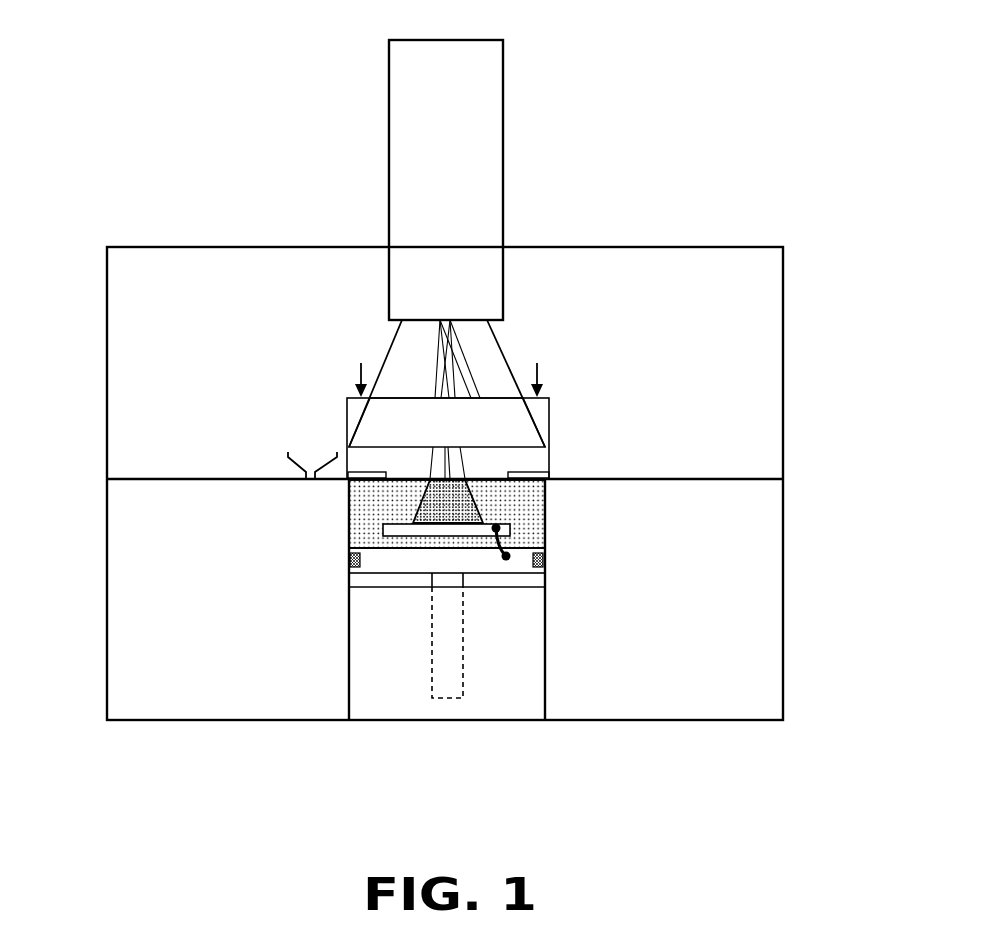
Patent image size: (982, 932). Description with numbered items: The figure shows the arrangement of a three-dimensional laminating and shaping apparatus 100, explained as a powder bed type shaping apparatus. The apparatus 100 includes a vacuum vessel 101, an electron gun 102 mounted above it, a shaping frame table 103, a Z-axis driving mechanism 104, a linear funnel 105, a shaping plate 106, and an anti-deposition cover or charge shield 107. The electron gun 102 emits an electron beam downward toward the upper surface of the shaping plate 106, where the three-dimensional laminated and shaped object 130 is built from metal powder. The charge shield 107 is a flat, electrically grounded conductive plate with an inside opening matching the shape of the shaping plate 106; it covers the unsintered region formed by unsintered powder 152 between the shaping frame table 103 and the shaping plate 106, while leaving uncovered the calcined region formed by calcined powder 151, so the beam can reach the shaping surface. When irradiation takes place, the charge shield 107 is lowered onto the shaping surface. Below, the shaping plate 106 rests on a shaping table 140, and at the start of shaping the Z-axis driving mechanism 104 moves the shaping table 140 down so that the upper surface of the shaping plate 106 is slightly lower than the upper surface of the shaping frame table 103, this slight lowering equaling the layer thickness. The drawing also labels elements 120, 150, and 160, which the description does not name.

The three-dimensional laminating and shaping apparatus 100 is at (178, 96).
The vacuum vessel 101 is at (107, 273).
The electron gun 102 is at (504, 112).
The shaping frame table 103 is at (765, 603).
The Z-axis driving mechanism 104 is at (443, 692).
The linear funnel 105 is at (285, 458).
The shaping plate 106 is at (412, 530).
The charge shield 107 is at (350, 468).
The condensing lens 120 is at (510, 360).
The three-dimensional laminated and shaped object 130 is at (458, 500).
The shaping table 140 is at (487, 563).
The workpiece / sample 150 is at (500, 529).
The calcined powder 151 is at (396, 492).
The unsintered powder 152 is at (365, 522).
The O-ring seal 160 is at (545, 556).